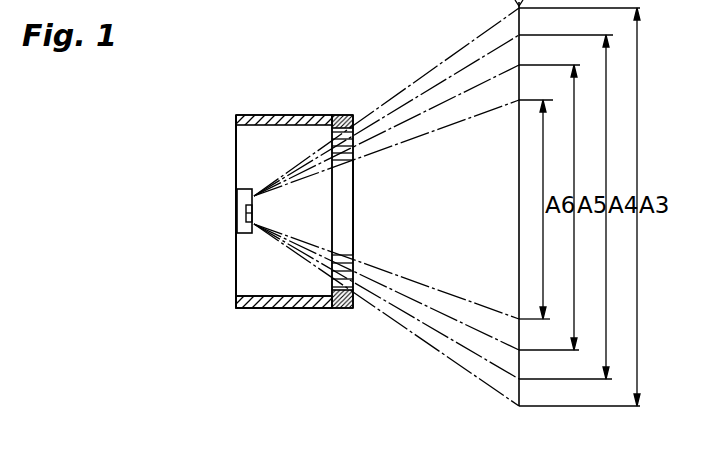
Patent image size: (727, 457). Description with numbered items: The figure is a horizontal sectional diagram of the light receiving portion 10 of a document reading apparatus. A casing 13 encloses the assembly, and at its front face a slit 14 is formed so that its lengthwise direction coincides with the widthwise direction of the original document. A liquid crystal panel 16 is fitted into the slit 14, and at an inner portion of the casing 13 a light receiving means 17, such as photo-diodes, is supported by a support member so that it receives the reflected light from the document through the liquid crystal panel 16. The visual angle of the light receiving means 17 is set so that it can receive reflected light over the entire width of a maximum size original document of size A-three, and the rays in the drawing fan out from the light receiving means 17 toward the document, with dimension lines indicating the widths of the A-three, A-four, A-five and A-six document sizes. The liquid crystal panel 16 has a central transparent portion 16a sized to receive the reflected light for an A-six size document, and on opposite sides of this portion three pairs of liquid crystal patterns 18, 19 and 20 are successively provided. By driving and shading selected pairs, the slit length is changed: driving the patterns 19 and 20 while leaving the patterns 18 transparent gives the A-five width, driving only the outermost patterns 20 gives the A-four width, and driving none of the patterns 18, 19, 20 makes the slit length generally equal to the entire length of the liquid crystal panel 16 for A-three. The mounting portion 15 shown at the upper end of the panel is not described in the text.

The light receiving portion 10 is at (293, 112).
The casing 13 is at (280, 308).
The slit 14 is at (353, 289).
The upper lens mounting portion 15 is at (342, 115).
The liquid crystal panel 16 is at (360, 225).
The central transparent portion 16a is at (345, 197).
The light receiving means 17 is at (248, 212).
The liquid crystal patterns 18 is at (353, 153).
The liquid crystal patterns 19 is at (332, 140).
The liquid crystal patterns 20 is at (332, 132).